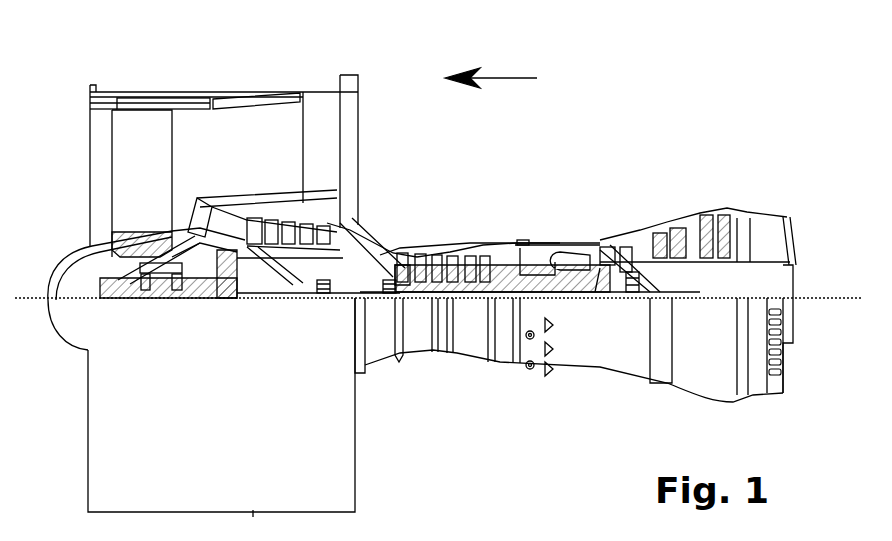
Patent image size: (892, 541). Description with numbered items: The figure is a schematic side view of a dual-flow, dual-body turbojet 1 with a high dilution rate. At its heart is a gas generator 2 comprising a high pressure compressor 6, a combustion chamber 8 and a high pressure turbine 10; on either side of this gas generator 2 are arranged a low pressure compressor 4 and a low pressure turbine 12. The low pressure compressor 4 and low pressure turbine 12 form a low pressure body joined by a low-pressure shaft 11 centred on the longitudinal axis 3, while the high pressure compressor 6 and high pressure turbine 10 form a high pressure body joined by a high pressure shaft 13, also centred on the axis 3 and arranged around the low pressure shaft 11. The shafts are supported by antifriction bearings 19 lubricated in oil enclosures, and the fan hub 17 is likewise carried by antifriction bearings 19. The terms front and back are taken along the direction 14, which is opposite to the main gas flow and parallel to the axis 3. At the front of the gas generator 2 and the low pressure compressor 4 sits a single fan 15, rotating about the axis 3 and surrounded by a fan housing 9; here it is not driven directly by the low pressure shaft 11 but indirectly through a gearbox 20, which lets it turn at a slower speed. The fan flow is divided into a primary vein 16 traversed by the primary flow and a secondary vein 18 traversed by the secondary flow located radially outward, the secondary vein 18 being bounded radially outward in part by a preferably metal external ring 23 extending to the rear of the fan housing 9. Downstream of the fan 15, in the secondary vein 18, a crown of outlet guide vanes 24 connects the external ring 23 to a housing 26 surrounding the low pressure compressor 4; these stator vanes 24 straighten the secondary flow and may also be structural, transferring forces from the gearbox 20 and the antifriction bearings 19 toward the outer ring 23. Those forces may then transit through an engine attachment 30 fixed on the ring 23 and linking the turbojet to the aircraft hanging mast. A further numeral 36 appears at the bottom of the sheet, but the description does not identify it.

The turbojet 1 is at (510, 185).
The gas generator 2 is at (470, 362).
The longitudinal axis 3 is at (28, 300).
The low pressure compressor 4 is at (318, 205).
The high pressure compressor 6 is at (470, 250).
The combustion chamber 8 is at (558, 260).
The fan housing 9 is at (190, 97).
The high pressure turbine 10 is at (610, 250).
The low-pressure shaft 11 is at (372, 300).
The low pressure turbine 12 is at (690, 215).
The high pressure shaft 13 is at (598, 270).
The direction 14 is at (520, 78).
The fan 15 is at (124, 92).
The primary vein 16 is at (383, 258).
The fan hub 17 is at (148, 275).
The secondary vein 18 is at (232, 150).
The antifriction bearings 19 is at (178, 290).
The gearbox 20 is at (228, 287).
The external ring 23 is at (280, 93).
The outlet guide vanes 24 is at (320, 143).
The housing 26 is at (276, 217).
The engine attachment 30 is at (360, 78).
The engine pylon / mount 36 is at (490, 520).